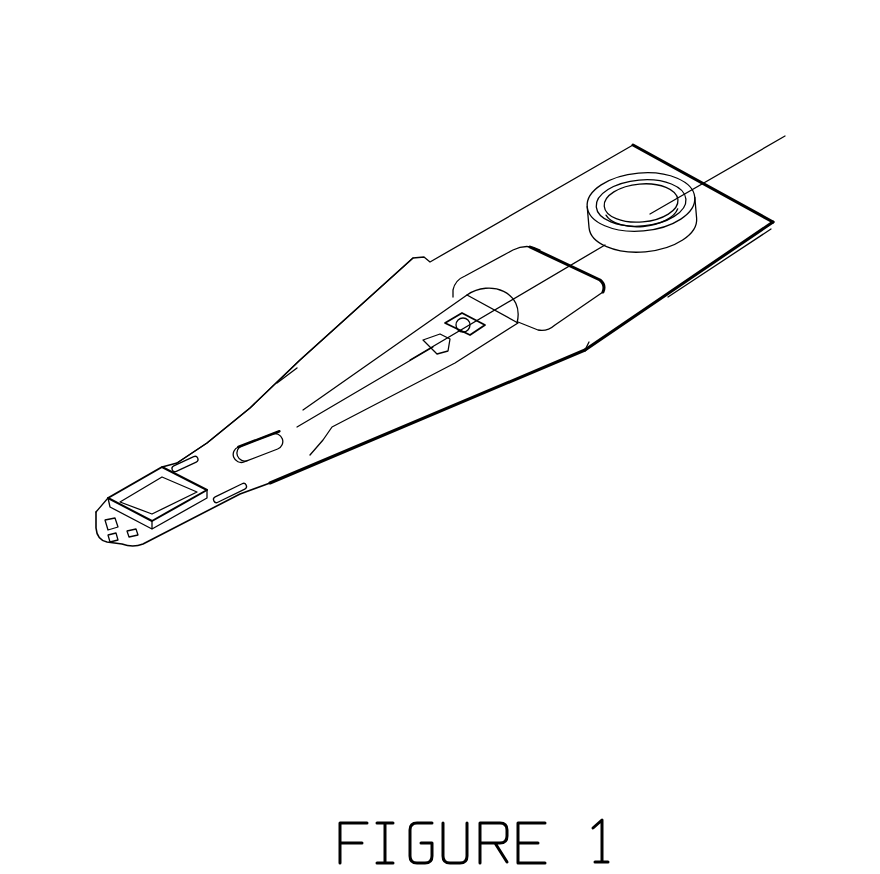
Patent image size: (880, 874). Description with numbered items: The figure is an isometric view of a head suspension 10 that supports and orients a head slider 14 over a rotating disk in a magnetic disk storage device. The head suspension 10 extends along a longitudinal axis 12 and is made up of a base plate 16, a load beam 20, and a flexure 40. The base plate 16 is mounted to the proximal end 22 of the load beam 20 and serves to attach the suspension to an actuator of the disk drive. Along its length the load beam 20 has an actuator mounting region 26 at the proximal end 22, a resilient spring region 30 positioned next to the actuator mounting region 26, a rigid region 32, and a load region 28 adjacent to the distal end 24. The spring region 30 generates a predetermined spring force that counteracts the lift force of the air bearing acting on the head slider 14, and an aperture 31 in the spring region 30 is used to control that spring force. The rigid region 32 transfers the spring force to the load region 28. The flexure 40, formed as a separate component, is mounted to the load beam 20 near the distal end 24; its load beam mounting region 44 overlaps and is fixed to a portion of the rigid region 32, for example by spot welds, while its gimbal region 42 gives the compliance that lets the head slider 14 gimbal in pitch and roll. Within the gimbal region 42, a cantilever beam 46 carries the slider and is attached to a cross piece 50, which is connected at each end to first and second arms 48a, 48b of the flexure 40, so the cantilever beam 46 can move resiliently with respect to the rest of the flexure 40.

The head suspension 10 is at (572, 154).
The longitudinal axis 12 is at (752, 156).
The head slider 14 is at (165, 522).
The base plate 16 is at (767, 237).
The load beam 20 is at (700, 252).
The proximal end 22 is at (733, 230).
The distal end 24 is at (178, 462).
The actuator mounting region 26 is at (617, 163).
The load region 28 is at (275, 483).
The resilient spring region 30 is at (585, 350).
The aperture 31 is at (537, 313).
The rigid region 32 is at (412, 400).
The flexure 40 is at (273, 420).
The gimbal region 42 is at (105, 512).
The load beam mounting region 44 is at (445, 318).
The cantilever beam 46 is at (112, 538).
The first arm 48a is at (105, 512).
The second arm 48b is at (182, 523).
The cross piece 50 is at (103, 512).